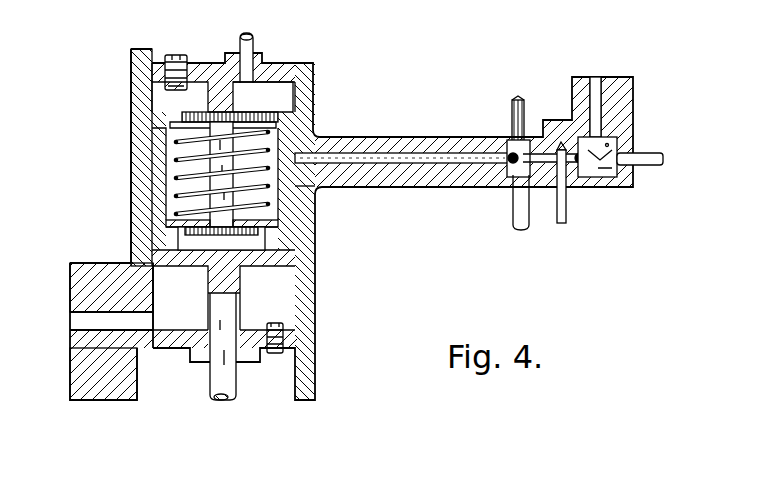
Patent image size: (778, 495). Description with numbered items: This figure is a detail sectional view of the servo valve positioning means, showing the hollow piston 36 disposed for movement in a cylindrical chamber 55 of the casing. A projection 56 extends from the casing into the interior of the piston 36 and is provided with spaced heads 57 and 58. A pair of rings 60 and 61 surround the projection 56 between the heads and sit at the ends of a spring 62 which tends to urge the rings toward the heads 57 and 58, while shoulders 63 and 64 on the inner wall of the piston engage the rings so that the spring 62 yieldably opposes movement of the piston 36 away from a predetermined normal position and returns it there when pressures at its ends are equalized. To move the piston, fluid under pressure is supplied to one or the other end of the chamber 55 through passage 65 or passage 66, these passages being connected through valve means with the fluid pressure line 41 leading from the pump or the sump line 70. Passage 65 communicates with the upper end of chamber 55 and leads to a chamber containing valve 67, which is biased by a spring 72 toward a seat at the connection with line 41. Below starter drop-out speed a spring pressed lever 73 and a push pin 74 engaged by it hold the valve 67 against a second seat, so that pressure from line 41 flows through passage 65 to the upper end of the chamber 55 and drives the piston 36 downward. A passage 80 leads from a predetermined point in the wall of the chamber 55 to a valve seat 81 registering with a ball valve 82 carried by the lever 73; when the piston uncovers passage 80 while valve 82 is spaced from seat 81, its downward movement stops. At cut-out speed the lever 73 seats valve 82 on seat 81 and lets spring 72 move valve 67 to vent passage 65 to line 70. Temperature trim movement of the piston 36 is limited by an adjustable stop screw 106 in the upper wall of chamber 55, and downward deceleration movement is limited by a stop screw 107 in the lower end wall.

The piston 36 is at (160, 176).
The fluid pressure line 41 is at (560, 225).
The cylindrical chamber 55 is at (306, 90).
The projection 56 is at (215, 195).
The head 57 is at (195, 118).
The head 58 is at (195, 243).
The ring 60 is at (205, 138).
The ring 61 is at (300, 196).
The spring 62 is at (318, 140).
The shoulder 63 is at (282, 112).
The shoulder 64 is at (265, 243).
The passage 65 is at (250, 56).
The passage 66 is at (95, 325).
The valve 67 is at (586, 170).
The sump line 70 is at (518, 230).
The spring 72 is at (620, 140).
The lever 73 is at (518, 98).
The push pin 74 is at (545, 137).
The passage 80 is at (396, 158).
The valve seat 81 is at (513, 150).
The ball valve 82 is at (512, 180).
The adjustable stop screw 106 is at (172, 56).
The stop screw 107 is at (277, 353).